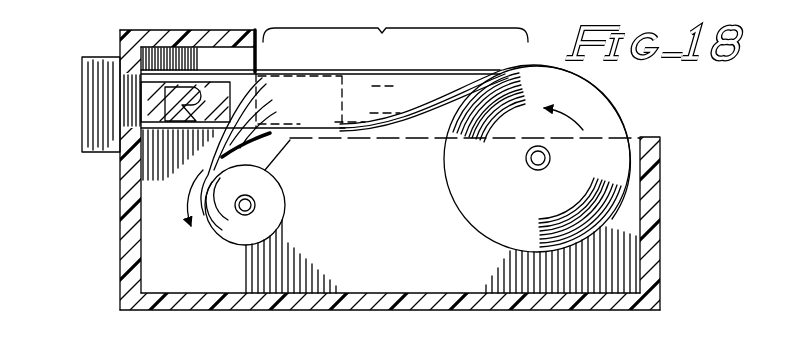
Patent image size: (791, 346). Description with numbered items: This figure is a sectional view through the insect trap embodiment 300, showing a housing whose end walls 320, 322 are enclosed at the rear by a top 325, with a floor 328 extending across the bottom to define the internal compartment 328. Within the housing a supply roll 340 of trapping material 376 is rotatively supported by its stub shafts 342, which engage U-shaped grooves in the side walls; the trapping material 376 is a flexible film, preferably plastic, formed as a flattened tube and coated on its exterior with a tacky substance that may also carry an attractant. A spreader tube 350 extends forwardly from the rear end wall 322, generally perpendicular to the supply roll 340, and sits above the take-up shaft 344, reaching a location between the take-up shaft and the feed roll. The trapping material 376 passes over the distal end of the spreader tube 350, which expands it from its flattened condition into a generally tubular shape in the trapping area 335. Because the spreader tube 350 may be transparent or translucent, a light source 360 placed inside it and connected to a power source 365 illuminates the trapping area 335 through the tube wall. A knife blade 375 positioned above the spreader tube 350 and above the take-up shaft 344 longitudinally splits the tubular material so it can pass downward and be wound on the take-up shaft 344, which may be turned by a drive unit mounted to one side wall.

The insect trap embodiment 300 is at (444, 62).
The end wall 320 is at (703, 195).
The rear end wall 322 is at (120, 244).
The top 325 is at (167, 43).
The floor / internal compartment 328 is at (416, 228).
The trapping area 335 is at (395, 21).
The supply roll 340 is at (587, 103).
The stub shaft 342 is at (532, 171).
The take-up shaft 344 is at (230, 246).
The spreader tube 350 is at (236, 96).
The light source 360 is at (320, 114).
The power source 365 is at (87, 78).
The knife blade 375 is at (244, 60).
The trapping material 376 is at (372, 84).